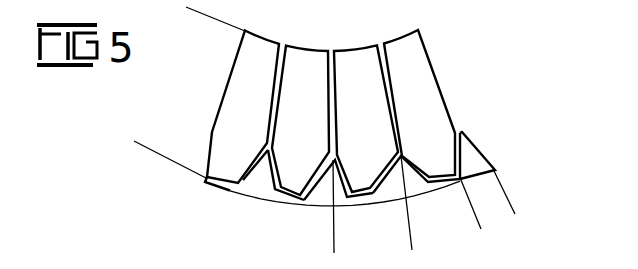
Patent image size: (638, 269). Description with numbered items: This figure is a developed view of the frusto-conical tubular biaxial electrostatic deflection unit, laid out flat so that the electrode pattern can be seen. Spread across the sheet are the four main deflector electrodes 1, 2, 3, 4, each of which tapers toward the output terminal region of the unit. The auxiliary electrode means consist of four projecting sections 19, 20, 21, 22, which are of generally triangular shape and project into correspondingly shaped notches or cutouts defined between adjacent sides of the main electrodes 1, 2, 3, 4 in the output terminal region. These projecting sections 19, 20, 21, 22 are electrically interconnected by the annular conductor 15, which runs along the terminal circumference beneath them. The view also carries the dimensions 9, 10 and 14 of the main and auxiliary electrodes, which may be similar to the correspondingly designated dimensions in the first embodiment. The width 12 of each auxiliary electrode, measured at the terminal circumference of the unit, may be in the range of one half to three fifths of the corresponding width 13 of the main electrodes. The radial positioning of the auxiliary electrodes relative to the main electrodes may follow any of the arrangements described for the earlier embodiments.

The main deflector electrode 1 is at (268, 41).
The main deflector electrode 2 is at (301, 49).
The main deflector electrode 3 is at (358, 47).
The main deflector electrode 4 is at (402, 42).
The dimension of the main and auxiliary electrodes 9 is at (188, 7).
The dimension of the main and auxiliary electrodes 10 is at (222, 99).
The width of each auxiliary electrode 12 is at (528, 205).
The width of the main electrodes 13 is at (334, 251).
The dimension of the main and auxiliary electrodes 14 is at (462, 133).
The annular conductor 15 is at (227, 188).
The projecting section 19 is at (253, 160).
The projecting section 20 is at (323, 183).
The projecting section 21 is at (393, 184).
The projecting section 22 is at (462, 168).